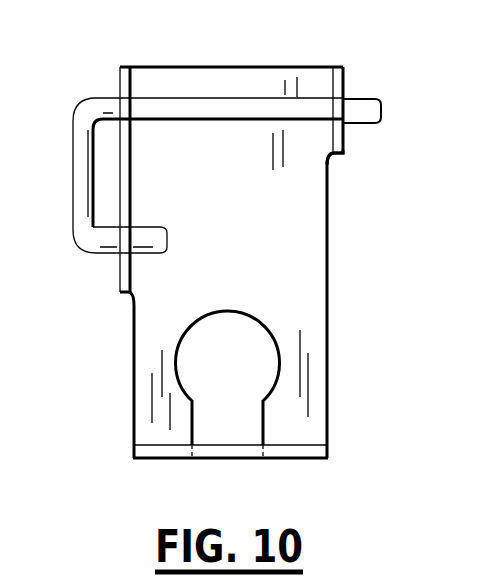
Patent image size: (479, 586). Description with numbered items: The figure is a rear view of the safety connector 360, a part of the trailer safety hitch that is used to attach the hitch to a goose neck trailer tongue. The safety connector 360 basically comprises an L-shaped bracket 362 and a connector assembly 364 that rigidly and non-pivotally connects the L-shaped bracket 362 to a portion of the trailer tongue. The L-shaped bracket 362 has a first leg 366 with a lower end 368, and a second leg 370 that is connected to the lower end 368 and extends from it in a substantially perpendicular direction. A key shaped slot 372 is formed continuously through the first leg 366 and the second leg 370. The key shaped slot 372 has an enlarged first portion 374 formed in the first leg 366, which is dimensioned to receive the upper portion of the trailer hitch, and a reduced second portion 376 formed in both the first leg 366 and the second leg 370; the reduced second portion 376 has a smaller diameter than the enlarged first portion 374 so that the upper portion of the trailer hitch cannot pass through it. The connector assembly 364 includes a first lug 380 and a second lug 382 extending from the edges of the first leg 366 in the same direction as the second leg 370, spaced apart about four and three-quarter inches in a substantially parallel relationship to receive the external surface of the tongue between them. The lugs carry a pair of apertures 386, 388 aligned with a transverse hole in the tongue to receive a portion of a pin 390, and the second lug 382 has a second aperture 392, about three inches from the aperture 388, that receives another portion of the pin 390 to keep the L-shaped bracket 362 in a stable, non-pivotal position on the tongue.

The safety connector 360 is at (404, 141).
The L-shaped bracket 362 is at (333, 241).
The connector assembly 364 is at (350, 75).
The first leg 366 is at (327, 330).
The lower end 368 is at (327, 457).
The second leg 370 is at (314, 462).
The key shaped slot 372 is at (217, 428).
The enlarged first portion 374 is at (228, 311).
The reduced second portion 376 is at (243, 428).
The first lug 380 is at (347, 82).
The second lug 382 is at (119, 73).
The aperture 386 is at (347, 153).
The aperture 388 is at (121, 118).
The pin 390 is at (210, 95).
The second aperture 392 is at (122, 260).